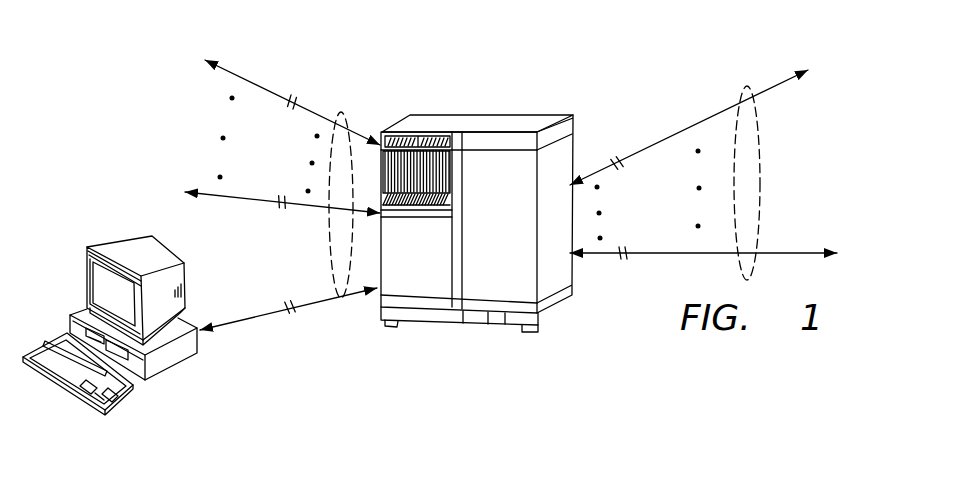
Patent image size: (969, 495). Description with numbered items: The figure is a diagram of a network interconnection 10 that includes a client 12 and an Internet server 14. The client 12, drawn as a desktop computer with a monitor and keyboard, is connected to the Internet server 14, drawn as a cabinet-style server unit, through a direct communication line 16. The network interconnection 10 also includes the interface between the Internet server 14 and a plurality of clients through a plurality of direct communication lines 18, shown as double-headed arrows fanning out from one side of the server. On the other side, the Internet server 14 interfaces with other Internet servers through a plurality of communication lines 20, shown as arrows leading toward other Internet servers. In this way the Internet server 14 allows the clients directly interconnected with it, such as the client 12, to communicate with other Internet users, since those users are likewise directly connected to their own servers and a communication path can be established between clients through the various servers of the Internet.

The network interconnection 10 is at (117, 95).
The client 12 is at (113, 245).
The Internet server 14 is at (481, 118).
The direct communication line 16 is at (258, 317).
The plurality of direct communication lines 18 is at (342, 112).
The plurality of communication lines 20 is at (748, 85).